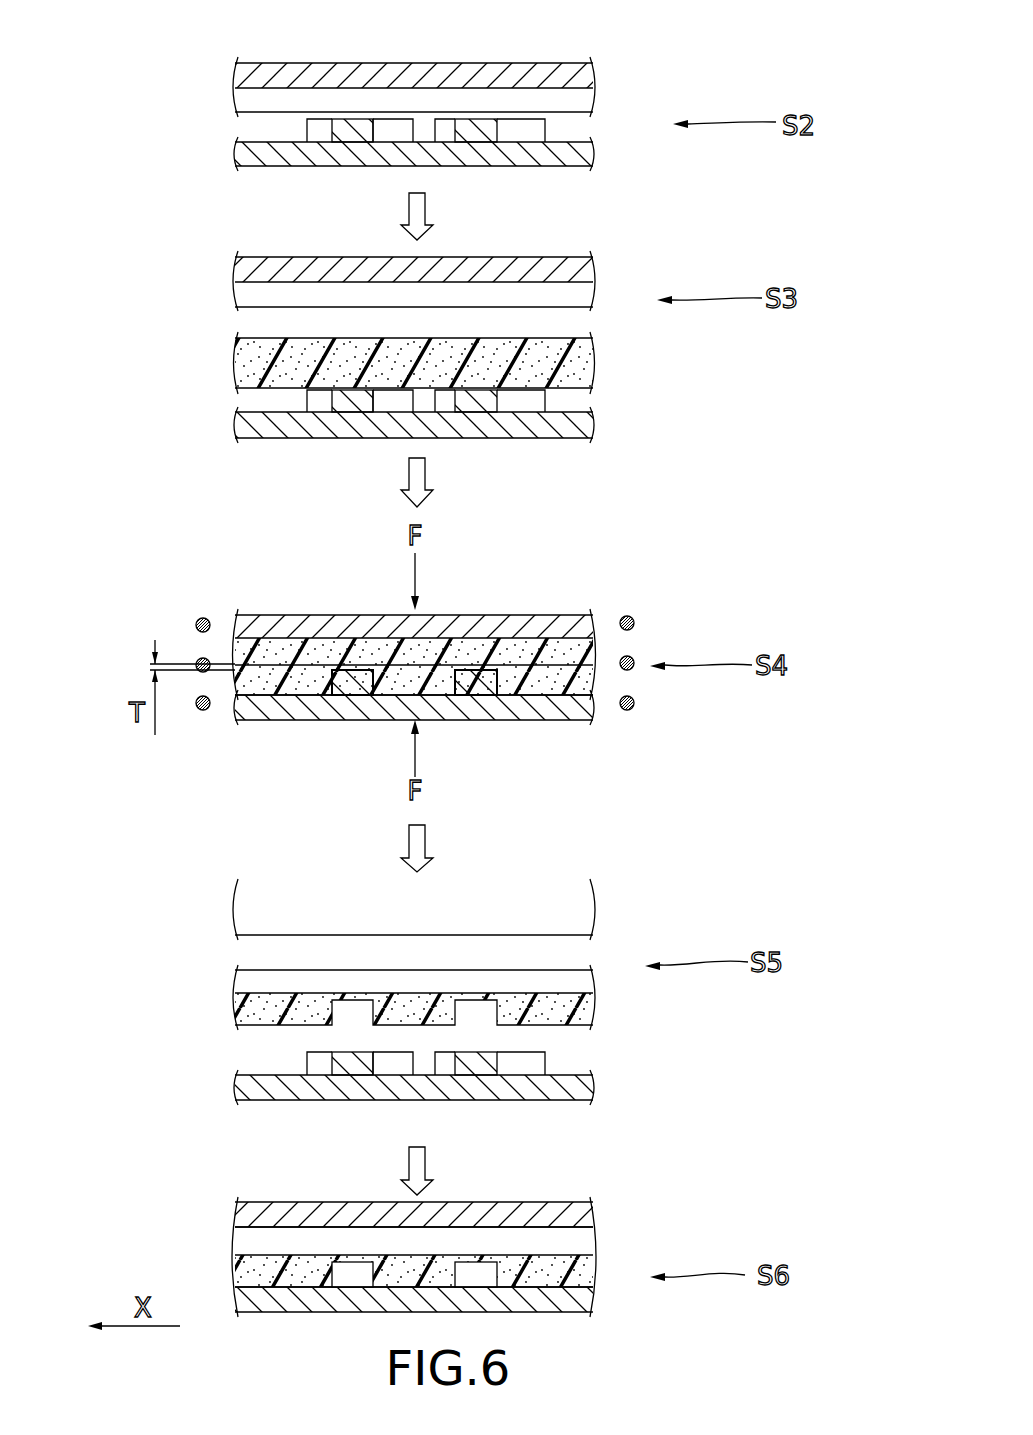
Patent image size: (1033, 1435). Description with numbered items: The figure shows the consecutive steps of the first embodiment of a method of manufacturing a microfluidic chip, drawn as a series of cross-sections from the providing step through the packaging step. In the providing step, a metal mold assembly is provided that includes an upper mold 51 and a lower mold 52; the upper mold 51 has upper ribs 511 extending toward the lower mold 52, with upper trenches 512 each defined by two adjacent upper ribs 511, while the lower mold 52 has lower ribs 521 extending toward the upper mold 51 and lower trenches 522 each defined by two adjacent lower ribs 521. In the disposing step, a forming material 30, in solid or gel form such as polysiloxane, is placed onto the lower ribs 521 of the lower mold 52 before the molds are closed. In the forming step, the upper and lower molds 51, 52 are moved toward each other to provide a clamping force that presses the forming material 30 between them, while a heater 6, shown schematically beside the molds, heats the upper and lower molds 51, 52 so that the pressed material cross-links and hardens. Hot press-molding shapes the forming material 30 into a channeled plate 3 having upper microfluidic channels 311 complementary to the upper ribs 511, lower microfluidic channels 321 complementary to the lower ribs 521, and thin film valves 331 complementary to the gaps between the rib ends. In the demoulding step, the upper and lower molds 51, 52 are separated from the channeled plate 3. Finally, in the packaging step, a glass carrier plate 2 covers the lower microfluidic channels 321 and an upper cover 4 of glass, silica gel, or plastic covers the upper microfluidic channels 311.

The carrier plate 2 is at (612, 1302).
The channeled plate 3 is at (563, 655).
The upper cover 4 is at (610, 1205).
The heater 6 is at (655, 622).
The forming material 30 is at (612, 360).
The upper mold 51 is at (612, 68).
The lower mold 52 is at (612, 150).
The upper microfluidic channels 311 is at (236, 986).
The lower microfluidic channels 321 is at (477, 1012).
The thin film valves 331 is at (360, 668).
The upper ribs 511 is at (597, 99).
The upper trenches 512 is at (737, 96).
The lower ribs 521 is at (472, 125).
The lower trenches 522 is at (560, 127).